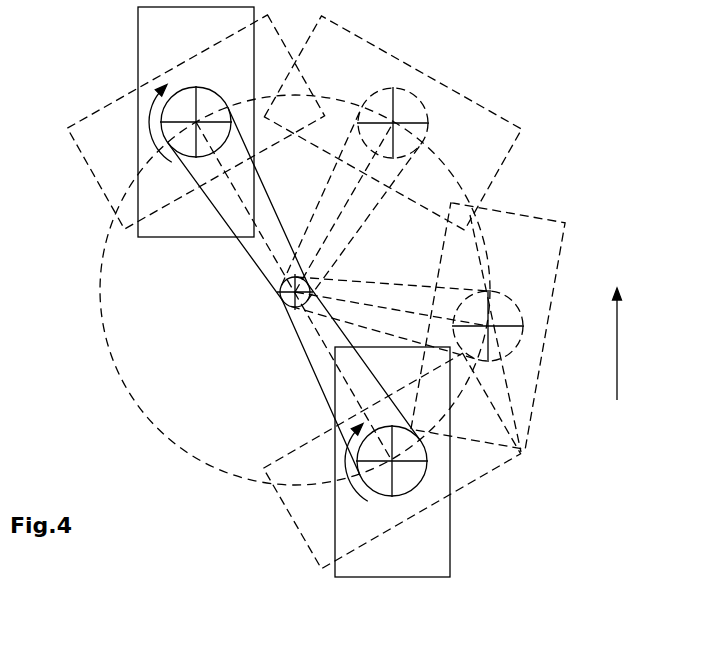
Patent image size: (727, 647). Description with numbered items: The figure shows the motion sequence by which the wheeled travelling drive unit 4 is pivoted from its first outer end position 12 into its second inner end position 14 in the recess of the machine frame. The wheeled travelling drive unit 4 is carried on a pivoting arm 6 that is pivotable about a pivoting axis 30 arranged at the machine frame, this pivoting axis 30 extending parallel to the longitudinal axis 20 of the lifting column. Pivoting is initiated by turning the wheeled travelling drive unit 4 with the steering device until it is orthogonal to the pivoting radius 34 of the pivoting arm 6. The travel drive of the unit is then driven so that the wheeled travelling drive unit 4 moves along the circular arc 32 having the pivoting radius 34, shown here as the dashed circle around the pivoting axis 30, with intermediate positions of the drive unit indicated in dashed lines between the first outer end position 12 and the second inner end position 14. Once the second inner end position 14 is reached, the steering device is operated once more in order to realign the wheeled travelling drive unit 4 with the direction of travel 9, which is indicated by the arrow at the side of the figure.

The wheeled travelling drive unit 4 is at (138, 38).
The pivoting arm 6 is at (307, 352).
The direction of travel 9 is at (617, 352).
The first outer end position 12 is at (478, 556).
The second inner end position 14 is at (282, 18).
The longitudinal axis 20 is at (418, 483).
The pivoting axis 30 is at (280, 292).
The circular arc 32 is at (487, 253).
The pivoting radius 34 is at (268, 249).